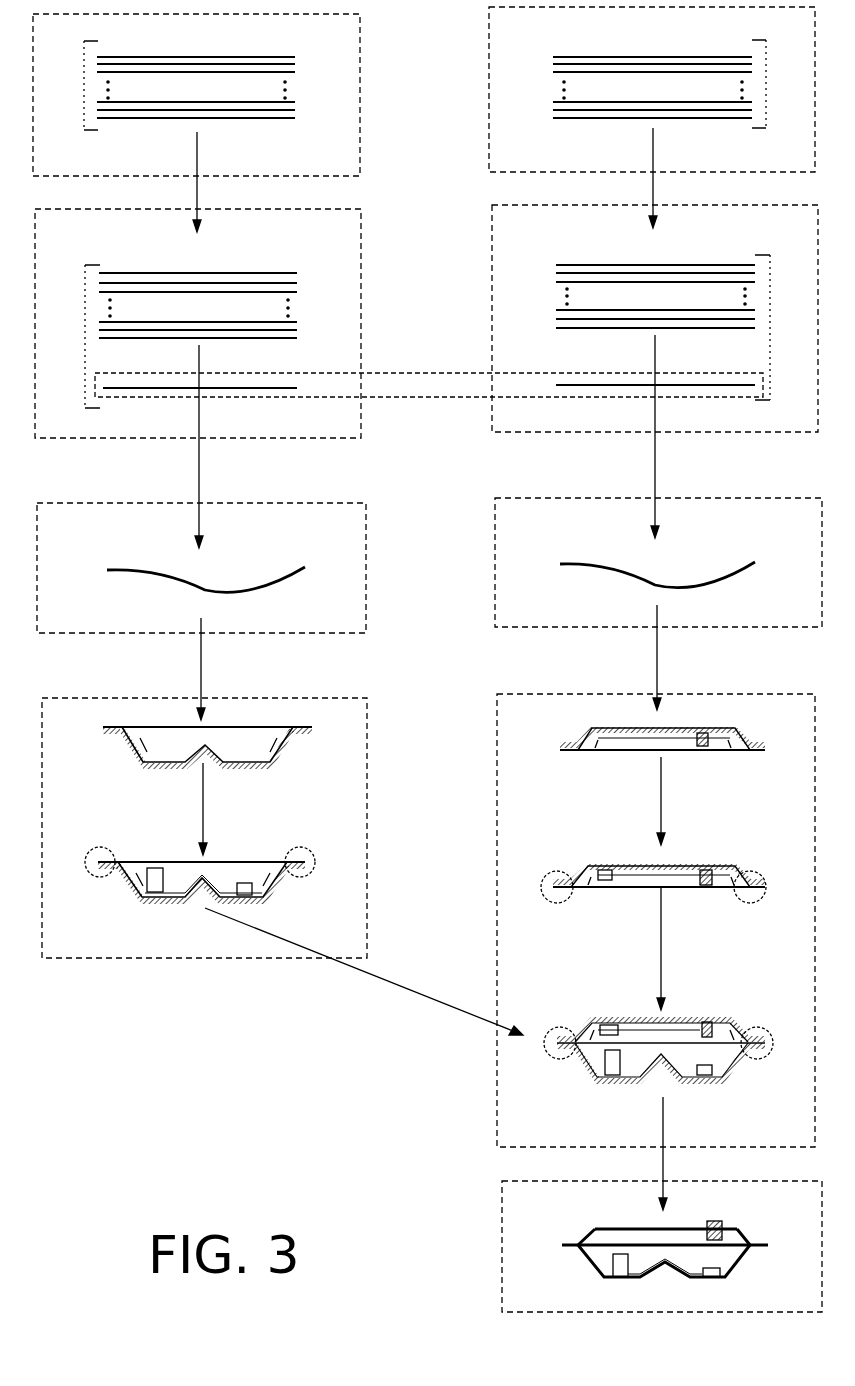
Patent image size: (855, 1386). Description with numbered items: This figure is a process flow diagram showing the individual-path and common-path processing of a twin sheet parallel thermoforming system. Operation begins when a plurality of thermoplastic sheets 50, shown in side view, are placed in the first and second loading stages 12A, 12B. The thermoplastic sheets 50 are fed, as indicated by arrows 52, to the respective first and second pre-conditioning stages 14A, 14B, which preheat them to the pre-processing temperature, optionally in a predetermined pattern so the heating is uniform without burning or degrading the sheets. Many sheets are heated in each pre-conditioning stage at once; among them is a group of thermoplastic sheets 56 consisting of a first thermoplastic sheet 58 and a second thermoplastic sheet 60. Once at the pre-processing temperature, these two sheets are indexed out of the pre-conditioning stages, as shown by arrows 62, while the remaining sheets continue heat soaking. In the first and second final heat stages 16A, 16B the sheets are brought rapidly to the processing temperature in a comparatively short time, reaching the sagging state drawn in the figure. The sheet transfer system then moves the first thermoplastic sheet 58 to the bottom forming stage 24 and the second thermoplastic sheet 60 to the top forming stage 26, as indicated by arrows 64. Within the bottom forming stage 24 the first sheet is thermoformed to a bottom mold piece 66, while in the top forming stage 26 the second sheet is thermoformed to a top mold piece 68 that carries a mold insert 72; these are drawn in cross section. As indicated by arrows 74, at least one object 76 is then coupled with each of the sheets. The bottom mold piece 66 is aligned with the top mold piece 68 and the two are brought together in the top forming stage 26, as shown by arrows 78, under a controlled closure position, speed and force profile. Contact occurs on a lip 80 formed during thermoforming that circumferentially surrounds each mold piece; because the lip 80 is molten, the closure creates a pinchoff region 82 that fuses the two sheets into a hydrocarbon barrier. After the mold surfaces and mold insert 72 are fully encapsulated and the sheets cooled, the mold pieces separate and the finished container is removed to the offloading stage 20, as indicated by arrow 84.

The first loading stage 12A is at (358, 58).
The second loading stage 12B is at (490, 102).
The first pre-conditioning stage 14A is at (360, 258).
The second pre-conditioning stage 14B is at (492, 305).
The first final heat stage 16A is at (364, 532).
The second final heat stage 16B is at (495, 598).
The offloading stage 20 is at (502, 1247).
The bottom forming stage 24 is at (366, 745).
The top forming stage 26 is at (497, 830).
The thermoplastic sheets 50 is at (78, 90).
The arrows 52 is at (192, 166).
The group of thermoplastic sheets 56 is at (407, 374).
The first thermoplastic sheet 58 is at (275, 388).
The second thermoplastic sheet 60 is at (574, 385).
The arrows 62 is at (196, 470).
The arrows 64 is at (197, 666).
The bottom mold piece 66 is at (257, 768).
The top mold piece 68 is at (612, 727).
The mold insert 72 is at (705, 727).
The arrows 74 is at (197, 804).
The object 76 is at (210, 872).
The arrows 78 is at (370, 980).
The lip 80 is at (108, 848).
The pinchoff region 82 is at (568, 1028).
The arrow 84 is at (667, 1130).